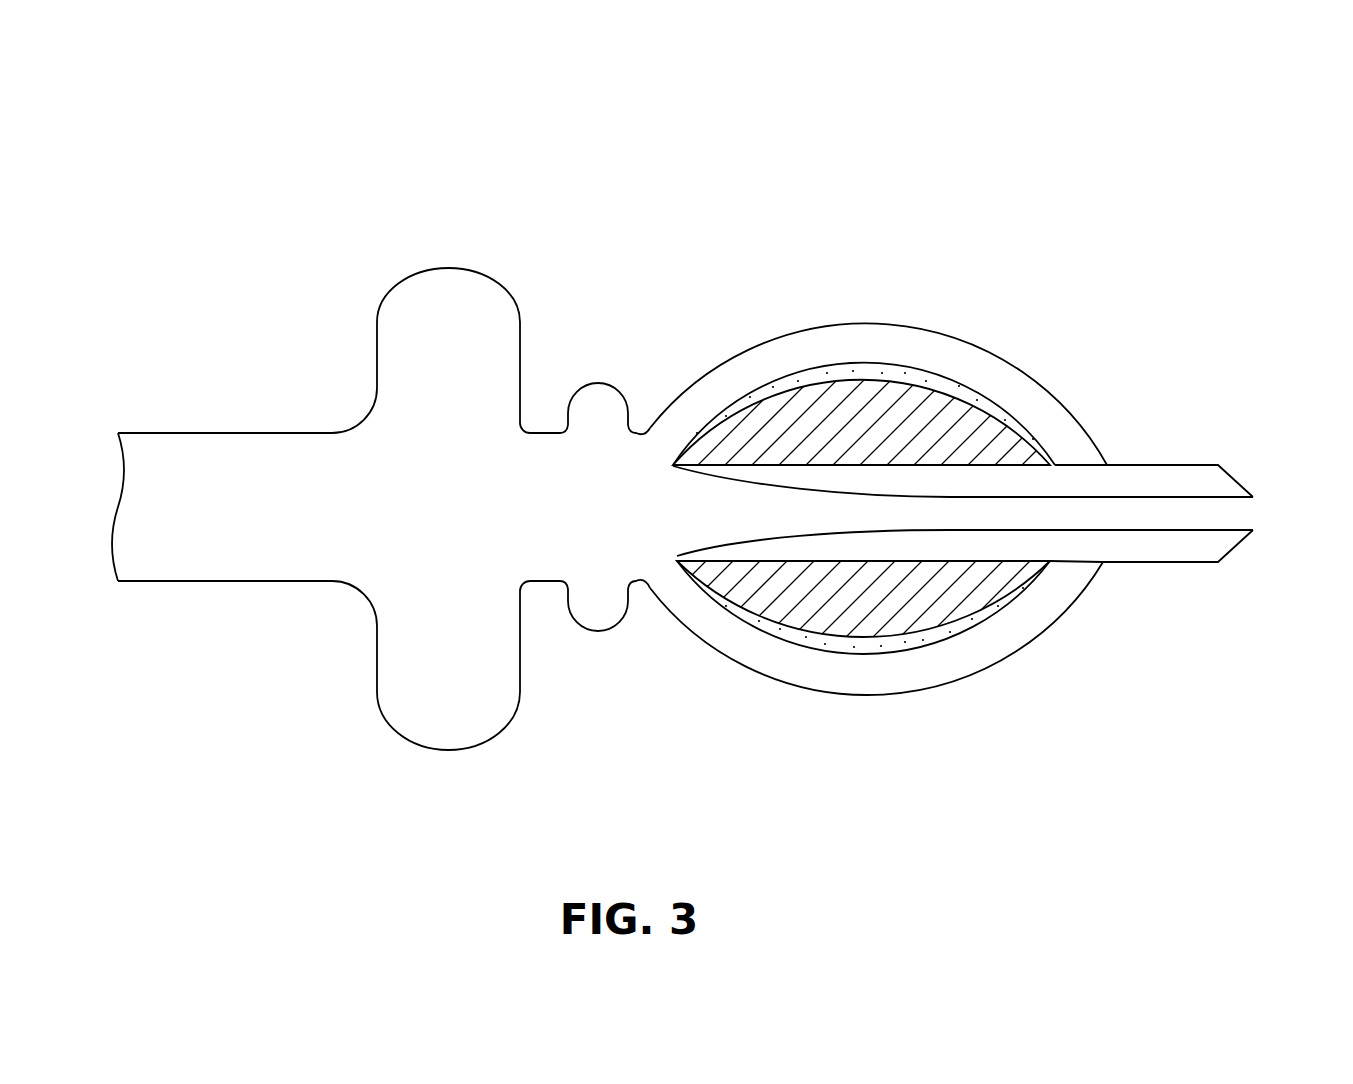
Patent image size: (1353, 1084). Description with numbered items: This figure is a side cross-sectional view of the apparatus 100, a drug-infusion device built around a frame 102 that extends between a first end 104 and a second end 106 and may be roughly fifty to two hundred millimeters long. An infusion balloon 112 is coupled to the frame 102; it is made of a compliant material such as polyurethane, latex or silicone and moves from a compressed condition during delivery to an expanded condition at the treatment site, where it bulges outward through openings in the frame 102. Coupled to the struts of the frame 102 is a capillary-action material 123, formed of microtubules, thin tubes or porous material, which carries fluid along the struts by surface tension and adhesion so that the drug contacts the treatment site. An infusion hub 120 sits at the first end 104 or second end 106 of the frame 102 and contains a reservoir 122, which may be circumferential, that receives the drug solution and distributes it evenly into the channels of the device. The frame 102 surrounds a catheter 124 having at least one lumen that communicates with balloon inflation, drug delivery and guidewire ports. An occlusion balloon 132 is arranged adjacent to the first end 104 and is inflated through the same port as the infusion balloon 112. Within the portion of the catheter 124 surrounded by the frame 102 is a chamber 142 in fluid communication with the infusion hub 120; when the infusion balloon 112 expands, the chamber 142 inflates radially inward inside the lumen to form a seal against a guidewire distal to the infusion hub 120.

The apparatus 100 is at (945, 135).
The frame 102 is at (993, 407).
The first end 104 is at (671, 463).
The second end 106 is at (1060, 465).
The infusion balloon 112 is at (770, 335).
The infusion hub 120 is at (595, 383).
The reservoir 122 is at (597, 600).
The capillary-action material 123 is at (872, 363).
The catheter 124 is at (1175, 465).
The occlusion balloon 132 is at (450, 268).
The chamber 142 is at (1012, 483).